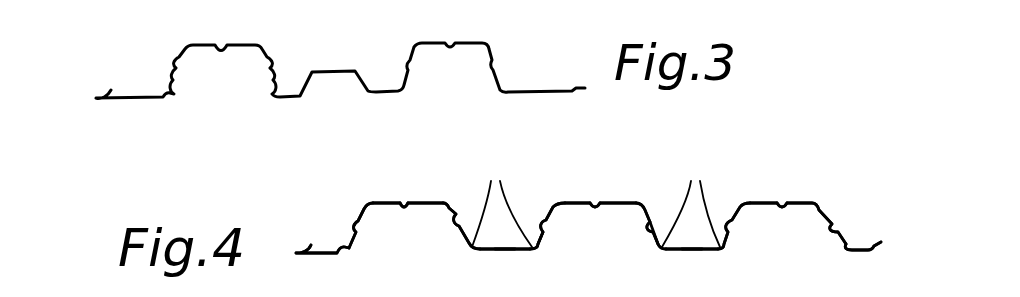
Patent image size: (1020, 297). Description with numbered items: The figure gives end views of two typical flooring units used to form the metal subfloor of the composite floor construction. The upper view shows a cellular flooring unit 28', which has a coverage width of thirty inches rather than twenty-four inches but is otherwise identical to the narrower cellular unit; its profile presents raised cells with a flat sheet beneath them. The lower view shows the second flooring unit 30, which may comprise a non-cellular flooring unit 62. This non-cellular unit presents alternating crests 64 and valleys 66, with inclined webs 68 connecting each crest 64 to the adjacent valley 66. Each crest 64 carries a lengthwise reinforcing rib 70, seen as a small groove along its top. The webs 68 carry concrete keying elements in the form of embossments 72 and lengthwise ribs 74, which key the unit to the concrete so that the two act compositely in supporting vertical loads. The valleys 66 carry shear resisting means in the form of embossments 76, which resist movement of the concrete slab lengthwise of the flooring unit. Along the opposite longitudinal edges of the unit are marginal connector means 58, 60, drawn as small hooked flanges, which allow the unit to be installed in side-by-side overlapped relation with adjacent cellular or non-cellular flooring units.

In FIG. 3, the cellular flooring unit 28' is at (355, 53).
In FIG. 4, the second flooring unit 30 is at (342, 222).
In FIG. 4, the marginal connector means 58 is at (302, 249).
In FIG. 4, the marginal connector means 60 is at (878, 251).
In FIG. 4, the non-cellular flooring unit 62 is at (808, 203).
In FIG. 4, the crests 64 is at (378, 203).
In FIG. 4, the valleys 66 is at (477, 252).
In FIG. 4, the webs 68 is at (650, 232).
In FIG. 4, the lengthwise reinforcing ribs 70 is at (402, 211).
In FIG. 4, the embossments 72 is at (457, 212).
In FIG. 4, the lengthwise ribs 74 is at (596, 201).
In FIG. 4, the embossments 76 is at (505, 251).